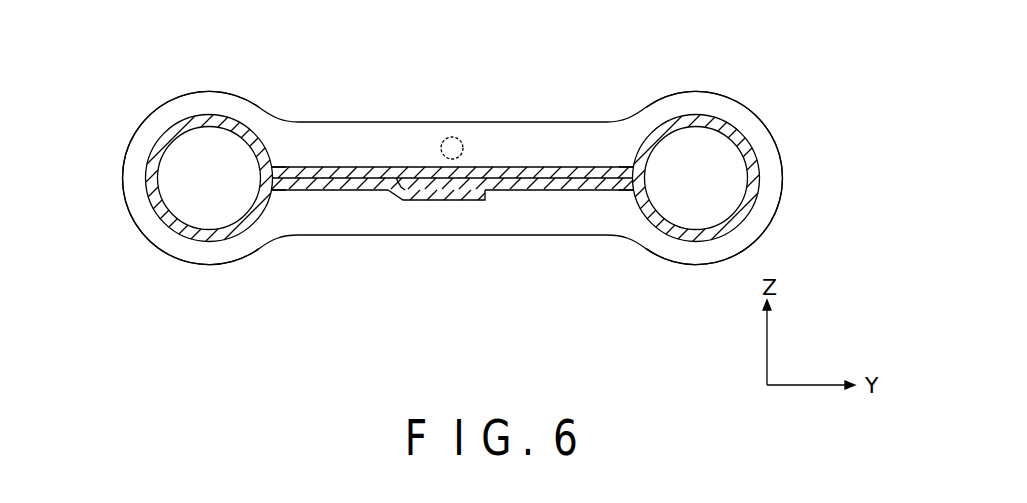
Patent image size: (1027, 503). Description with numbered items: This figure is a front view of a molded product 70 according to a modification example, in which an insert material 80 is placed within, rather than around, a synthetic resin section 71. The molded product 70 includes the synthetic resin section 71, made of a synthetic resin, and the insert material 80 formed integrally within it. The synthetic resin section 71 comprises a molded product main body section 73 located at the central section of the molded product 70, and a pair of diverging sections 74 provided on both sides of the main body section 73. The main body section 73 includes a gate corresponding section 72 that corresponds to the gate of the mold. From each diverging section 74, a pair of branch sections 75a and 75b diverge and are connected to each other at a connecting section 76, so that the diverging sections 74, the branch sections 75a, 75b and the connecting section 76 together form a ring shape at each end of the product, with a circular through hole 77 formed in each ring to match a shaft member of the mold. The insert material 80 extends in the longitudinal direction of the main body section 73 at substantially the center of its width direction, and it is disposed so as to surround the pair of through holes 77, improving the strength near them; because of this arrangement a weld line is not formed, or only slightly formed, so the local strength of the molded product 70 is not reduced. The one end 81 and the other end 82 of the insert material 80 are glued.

The molded product 70 is at (607, 57).
The synthetic resin section 71 is at (392, 121).
The gate corresponding section 72 is at (452, 137).
The molded product main body section 73 is at (494, 160).
The diverging section 74 is at (273, 167).
The branch section 75a is at (208, 107).
The branch section 75b is at (198, 248).
The connecting section 76 is at (140, 163).
The through hole 77 is at (190, 197).
The insert material 80 is at (522, 192).
The one end 81 is at (462, 200).
The other end 82 is at (423, 200).